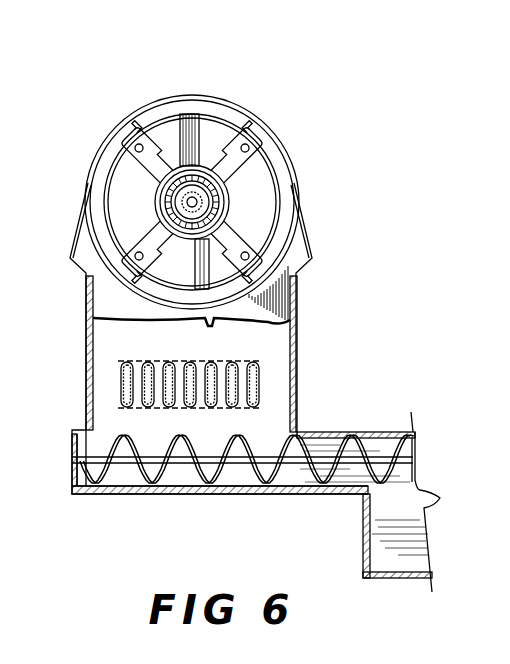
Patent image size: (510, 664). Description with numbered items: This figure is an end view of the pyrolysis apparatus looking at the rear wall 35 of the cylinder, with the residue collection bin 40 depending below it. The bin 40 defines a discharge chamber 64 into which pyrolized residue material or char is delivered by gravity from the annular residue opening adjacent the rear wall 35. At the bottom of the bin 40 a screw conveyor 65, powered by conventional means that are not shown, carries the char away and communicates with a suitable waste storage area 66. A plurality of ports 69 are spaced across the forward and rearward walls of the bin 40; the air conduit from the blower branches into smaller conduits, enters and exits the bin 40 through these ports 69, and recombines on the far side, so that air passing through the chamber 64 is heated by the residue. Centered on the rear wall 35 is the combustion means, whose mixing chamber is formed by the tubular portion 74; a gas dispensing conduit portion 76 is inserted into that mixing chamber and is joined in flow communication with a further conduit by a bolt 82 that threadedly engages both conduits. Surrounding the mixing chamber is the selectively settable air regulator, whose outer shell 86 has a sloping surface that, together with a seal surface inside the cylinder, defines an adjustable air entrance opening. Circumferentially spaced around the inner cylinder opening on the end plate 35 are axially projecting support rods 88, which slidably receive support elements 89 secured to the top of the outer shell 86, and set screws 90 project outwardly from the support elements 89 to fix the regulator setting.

The rear wall 35 is at (207, 128).
The residue collection bin 40 is at (300, 360).
The discharge chamber 64 is at (276, 404).
The screw conveyor 65 is at (173, 473).
The waste storage area 66 is at (380, 568).
The ports 69 is at (203, 363).
The tubular portion 74 is at (203, 198).
The gas dispensing conduit portion 76 is at (199, 204).
The bolt 82 is at (182, 201).
The outer shell 86 is at (160, 203).
The support rods 88 is at (135, 148).
The support elements 89 is at (135, 145).
The set screws 90 is at (136, 128).